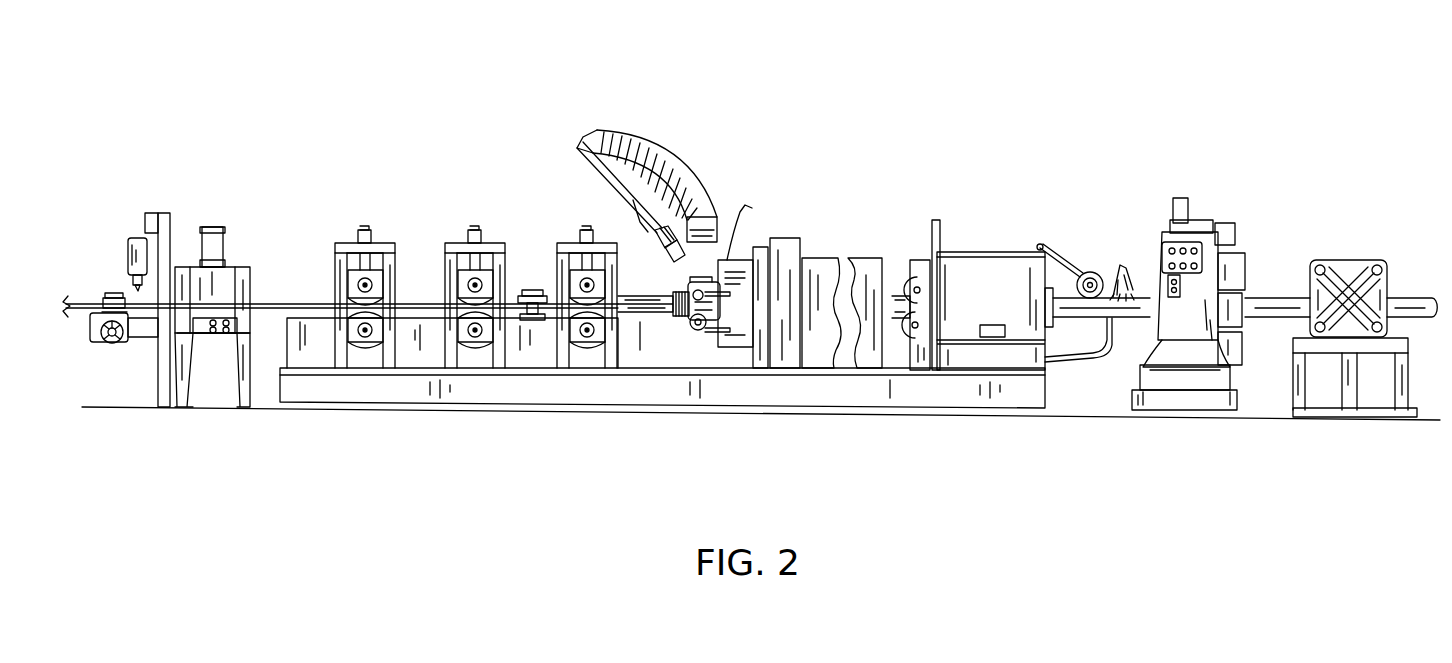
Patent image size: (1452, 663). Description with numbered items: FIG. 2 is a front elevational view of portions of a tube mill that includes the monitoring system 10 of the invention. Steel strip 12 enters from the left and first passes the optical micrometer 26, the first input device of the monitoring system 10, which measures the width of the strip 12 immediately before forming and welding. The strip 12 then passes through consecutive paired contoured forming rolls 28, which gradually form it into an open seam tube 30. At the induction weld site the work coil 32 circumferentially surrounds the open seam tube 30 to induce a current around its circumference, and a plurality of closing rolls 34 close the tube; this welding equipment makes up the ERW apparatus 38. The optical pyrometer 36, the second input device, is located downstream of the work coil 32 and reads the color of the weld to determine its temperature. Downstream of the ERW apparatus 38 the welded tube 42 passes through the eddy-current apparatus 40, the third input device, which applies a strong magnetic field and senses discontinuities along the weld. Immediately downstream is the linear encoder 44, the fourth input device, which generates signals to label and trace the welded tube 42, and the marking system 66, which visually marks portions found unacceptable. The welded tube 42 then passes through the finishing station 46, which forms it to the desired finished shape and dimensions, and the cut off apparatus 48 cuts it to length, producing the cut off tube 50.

The monitoring system 10 is at (943, 123).
The strip 12 is at (90, 300).
The optical micrometer 26 is at (140, 207).
The forming rolls 28 is at (572, 343).
The open seam tube 30 is at (655, 296).
The work coil 32 is at (672, 316).
The closing rolls 34 is at (693, 332).
The optical pyrometer 36 is at (600, 184).
The ERW apparatus 38 is at (820, 253).
The eddy-current apparatus 40 is at (977, 248).
The welded tube 42 is at (892, 293).
The linear encoder 44 is at (1080, 265).
The finishing station 46 is at (1150, 335).
The cut off apparatus 48 is at (1343, 260).
The cut off tube 50 is at (1412, 283).
The marking system 66 is at (1130, 263).